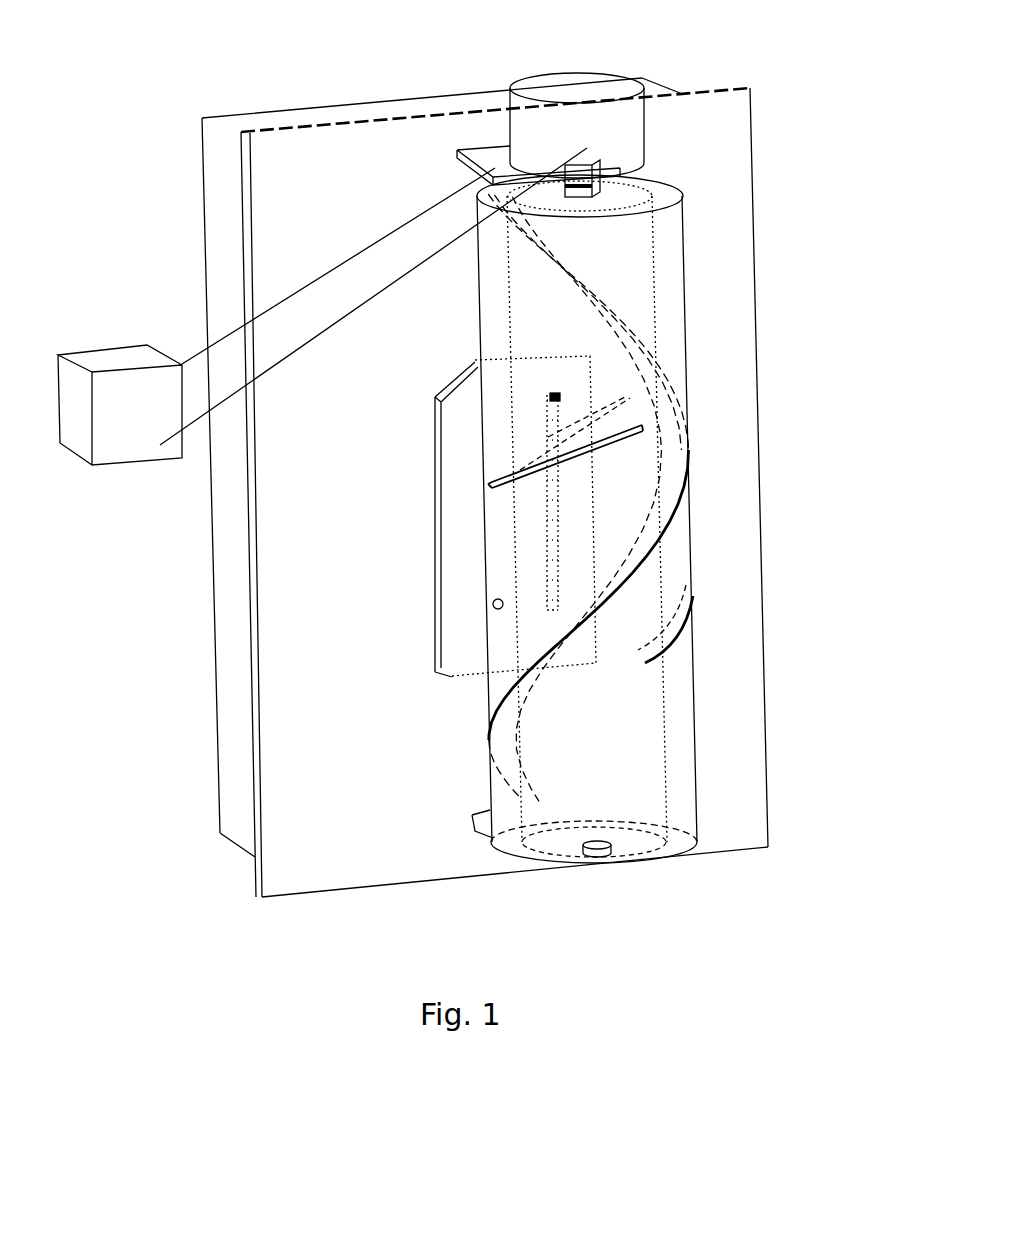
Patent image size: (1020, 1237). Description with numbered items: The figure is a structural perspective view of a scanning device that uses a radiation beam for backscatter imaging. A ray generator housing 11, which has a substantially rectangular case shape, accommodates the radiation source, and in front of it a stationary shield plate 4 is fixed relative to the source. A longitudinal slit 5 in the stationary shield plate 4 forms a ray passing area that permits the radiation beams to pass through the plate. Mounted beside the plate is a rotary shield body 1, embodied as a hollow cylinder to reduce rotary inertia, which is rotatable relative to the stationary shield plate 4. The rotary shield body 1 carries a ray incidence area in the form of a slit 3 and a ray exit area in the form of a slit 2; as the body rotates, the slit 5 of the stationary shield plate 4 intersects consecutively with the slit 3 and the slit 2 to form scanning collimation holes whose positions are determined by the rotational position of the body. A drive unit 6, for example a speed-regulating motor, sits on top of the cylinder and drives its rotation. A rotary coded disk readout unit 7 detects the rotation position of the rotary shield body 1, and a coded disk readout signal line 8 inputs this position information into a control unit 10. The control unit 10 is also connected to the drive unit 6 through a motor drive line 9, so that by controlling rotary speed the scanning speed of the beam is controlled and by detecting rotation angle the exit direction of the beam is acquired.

The rotary shield body 1 is at (678, 798).
The ray exit area (slit) 2 is at (615, 590).
The ray incidence area (slit) 3 is at (622, 443).
The stationary shield plate 4 is at (582, 402).
The longitudinal slit (ray passing area) 5 is at (562, 396).
The drive unit 6 is at (620, 128).
The rotary coded disk readout unit 7 is at (486, 150).
The coded disk readout signal line 8 is at (326, 268).
The motor drive line 9 is at (320, 330).
The control unit 10 is at (147, 422).
The ray generator housing 11 is at (355, 701).